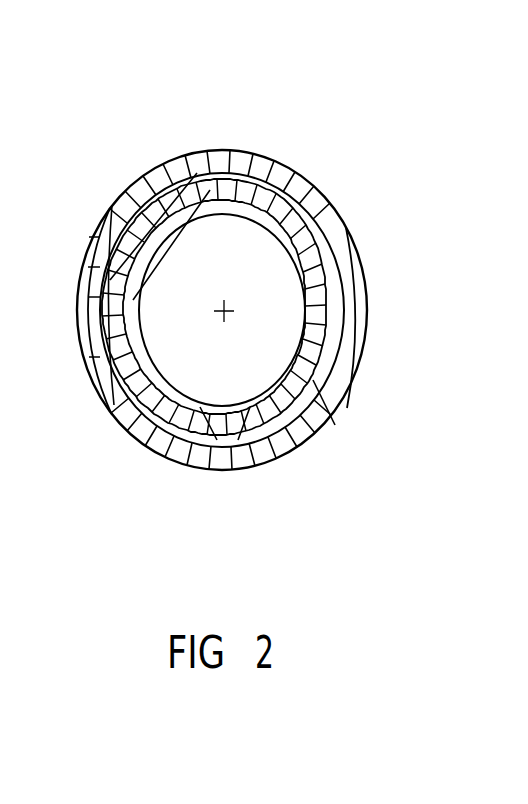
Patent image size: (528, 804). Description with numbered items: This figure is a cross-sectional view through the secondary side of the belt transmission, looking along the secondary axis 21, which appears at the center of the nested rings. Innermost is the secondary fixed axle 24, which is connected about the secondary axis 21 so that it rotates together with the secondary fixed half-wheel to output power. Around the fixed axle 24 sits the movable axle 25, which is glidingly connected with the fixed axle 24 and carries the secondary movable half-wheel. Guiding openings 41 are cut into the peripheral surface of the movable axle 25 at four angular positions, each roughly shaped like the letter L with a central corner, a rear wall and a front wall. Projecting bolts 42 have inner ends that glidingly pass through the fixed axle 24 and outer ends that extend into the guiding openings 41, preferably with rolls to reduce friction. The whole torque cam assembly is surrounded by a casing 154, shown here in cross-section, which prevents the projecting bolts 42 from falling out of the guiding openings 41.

The casing 154 is at (232, 150).
The secondary axis 21 is at (207, 298).
The secondary fixed axle 24 is at (128, 262).
The movable axle 25 is at (310, 240).
The guiding openings 41 is at (125, 329).
The projecting bolts 42 is at (337, 308).